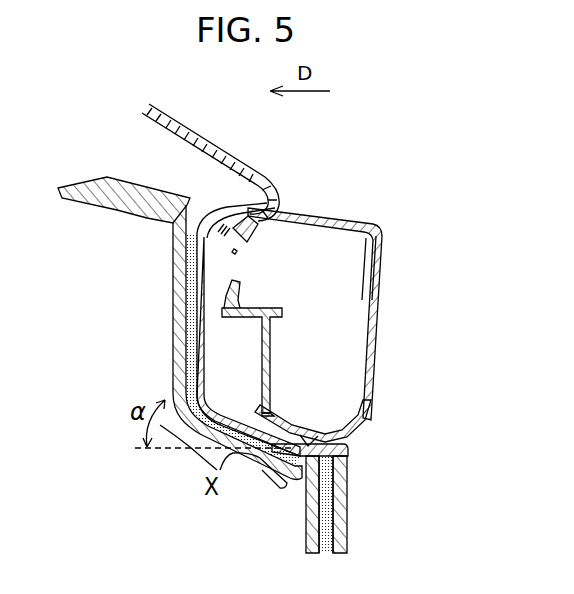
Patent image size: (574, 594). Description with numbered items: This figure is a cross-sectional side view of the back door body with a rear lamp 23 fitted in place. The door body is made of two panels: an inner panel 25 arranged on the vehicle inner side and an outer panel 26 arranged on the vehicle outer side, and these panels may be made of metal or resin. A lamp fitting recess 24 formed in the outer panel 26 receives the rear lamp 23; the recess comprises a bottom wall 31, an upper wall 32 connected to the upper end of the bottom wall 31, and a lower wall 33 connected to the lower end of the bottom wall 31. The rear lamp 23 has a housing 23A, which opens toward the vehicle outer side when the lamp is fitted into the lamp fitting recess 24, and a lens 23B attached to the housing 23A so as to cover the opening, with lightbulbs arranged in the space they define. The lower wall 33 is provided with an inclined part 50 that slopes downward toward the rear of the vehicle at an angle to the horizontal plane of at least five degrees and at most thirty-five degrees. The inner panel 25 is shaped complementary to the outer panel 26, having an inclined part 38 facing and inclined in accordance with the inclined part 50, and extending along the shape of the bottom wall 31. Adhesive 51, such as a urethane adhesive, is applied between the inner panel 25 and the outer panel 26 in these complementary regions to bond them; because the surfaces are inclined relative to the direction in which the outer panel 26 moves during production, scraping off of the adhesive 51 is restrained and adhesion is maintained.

The rear lamp 23 is at (378, 337).
The housing 23A is at (258, 328).
The lens 23B is at (383, 253).
The lamp fitting recess 24 is at (277, 203).
The inner panel 25 is at (312, 530).
The outer panel 26 is at (343, 533).
The bottom wall 31 is at (172, 280).
The upper wall 32 is at (230, 200).
The lower wall 33 is at (305, 482).
The inclined part 38 is at (238, 472).
The inclined part 50 is at (233, 432).
The adhesive 51 is at (185, 315).